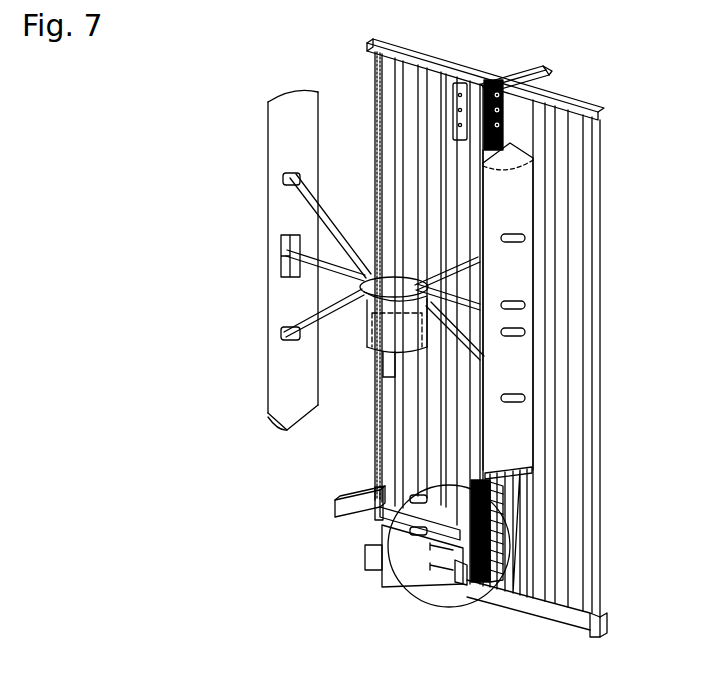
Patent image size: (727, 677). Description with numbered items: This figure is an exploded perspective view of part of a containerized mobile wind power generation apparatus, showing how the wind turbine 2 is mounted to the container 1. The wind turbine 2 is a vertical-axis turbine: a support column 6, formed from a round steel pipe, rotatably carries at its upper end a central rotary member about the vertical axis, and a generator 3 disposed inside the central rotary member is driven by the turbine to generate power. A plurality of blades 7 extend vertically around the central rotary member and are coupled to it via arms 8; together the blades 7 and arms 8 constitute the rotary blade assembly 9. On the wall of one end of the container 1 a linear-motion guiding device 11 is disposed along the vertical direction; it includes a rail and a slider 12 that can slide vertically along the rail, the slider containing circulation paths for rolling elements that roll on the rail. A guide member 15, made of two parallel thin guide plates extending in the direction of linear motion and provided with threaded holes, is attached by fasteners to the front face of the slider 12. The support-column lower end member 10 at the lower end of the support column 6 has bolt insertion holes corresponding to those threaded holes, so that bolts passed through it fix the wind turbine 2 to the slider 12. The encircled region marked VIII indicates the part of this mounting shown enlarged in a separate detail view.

The container 1 is at (368, 88).
The wind turbine 2 is at (278, 420).
The generator 3 is at (393, 337).
The support column 6 is at (393, 432).
The blades 7 is at (278, 150).
The arms 8 is at (322, 231).
The rotary blade assembly 9 is at (288, 251).
The support-column lower end member 10 is at (428, 580).
The linear-motion guiding device 11 is at (490, 492).
The slider 12 is at (494, 586).
The guide member 15 is at (483, 578).
The detail view circle VIII is at (485, 563).